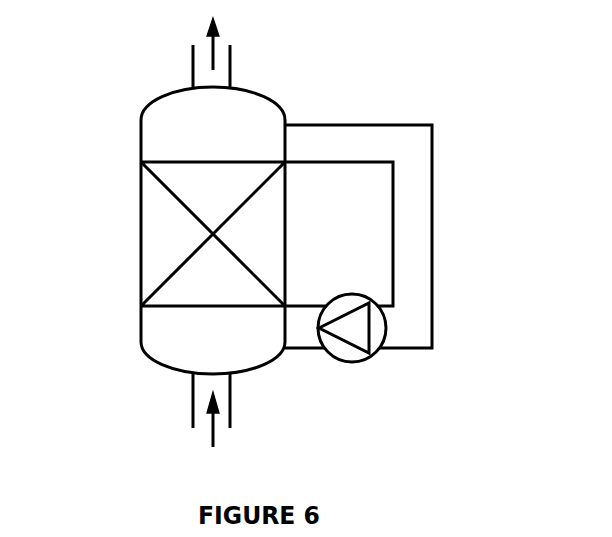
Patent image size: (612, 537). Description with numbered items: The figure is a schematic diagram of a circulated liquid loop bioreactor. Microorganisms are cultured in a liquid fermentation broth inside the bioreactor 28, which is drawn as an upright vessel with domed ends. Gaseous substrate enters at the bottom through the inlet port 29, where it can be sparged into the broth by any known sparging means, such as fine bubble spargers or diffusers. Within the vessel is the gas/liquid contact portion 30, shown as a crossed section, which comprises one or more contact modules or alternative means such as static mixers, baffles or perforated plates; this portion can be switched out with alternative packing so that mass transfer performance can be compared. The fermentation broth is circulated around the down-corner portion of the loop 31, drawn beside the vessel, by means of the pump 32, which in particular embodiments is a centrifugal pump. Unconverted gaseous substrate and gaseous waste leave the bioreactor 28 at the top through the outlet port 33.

The bioreactor 28 is at (268, 98).
The inlet port 29 is at (213, 447).
The gas/liquid contact portion 30 is at (168, 243).
The loop 31 is at (405, 189).
The pump 32 is at (381, 350).
The outlet port 33 is at (213, 70).